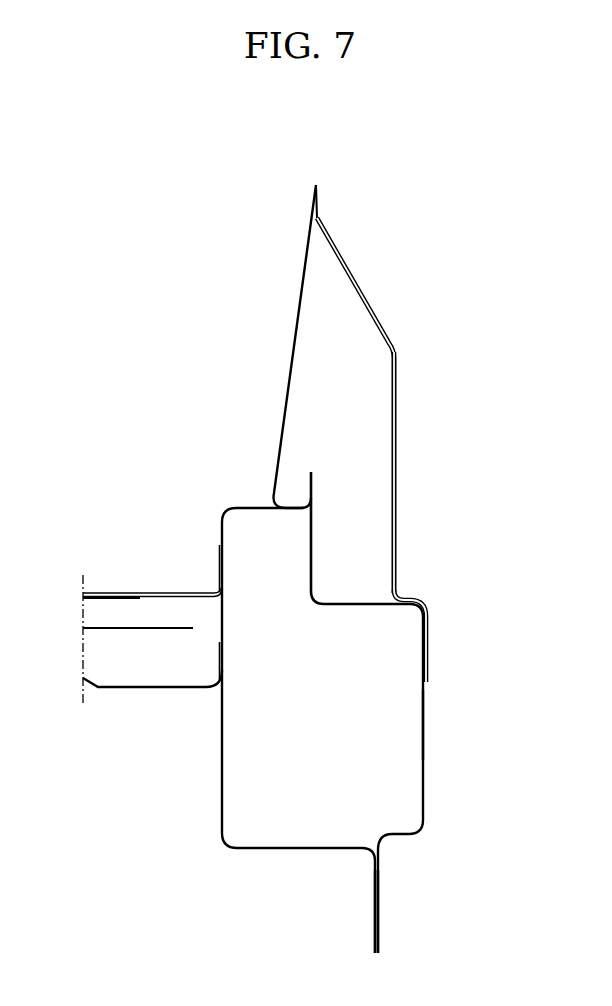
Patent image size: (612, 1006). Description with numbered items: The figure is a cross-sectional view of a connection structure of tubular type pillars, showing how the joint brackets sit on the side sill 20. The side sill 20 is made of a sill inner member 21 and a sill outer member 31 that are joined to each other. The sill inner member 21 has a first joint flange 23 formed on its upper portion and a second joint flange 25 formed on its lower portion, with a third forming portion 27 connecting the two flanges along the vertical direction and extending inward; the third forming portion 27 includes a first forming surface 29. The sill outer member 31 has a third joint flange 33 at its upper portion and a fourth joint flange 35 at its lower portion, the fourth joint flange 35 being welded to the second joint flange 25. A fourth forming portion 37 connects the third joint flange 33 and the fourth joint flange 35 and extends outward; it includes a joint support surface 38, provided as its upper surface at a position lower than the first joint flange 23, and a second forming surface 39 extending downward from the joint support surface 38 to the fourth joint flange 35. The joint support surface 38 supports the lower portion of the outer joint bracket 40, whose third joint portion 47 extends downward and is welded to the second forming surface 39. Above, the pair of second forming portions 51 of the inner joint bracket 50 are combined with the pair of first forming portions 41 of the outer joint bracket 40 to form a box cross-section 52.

The side sill 20 is at (330, 709).
The sill inner member 21 is at (248, 697).
The first joint flange 23 is at (308, 480).
The second joint flange 25 is at (374, 938).
The third forming portion 27 is at (207, 788).
The first forming surface 29 is at (220, 745).
The sill outer member 31 is at (399, 712).
The third joint flange 33 is at (313, 523).
The fourth joint flange 35 is at (379, 923).
The fourth forming portion 37 is at (439, 768).
The joint support surface 38 is at (363, 604).
The second forming surface 39 is at (424, 725).
The outer joint bracket 40 is at (402, 405).
The first forming portion 41 is at (397, 372).
The third joint portion 47 is at (426, 650).
The inner joint bracket 50 is at (342, 389).
The second forming portion 51 is at (285, 262).
The box cross-section 52 is at (340, 389).